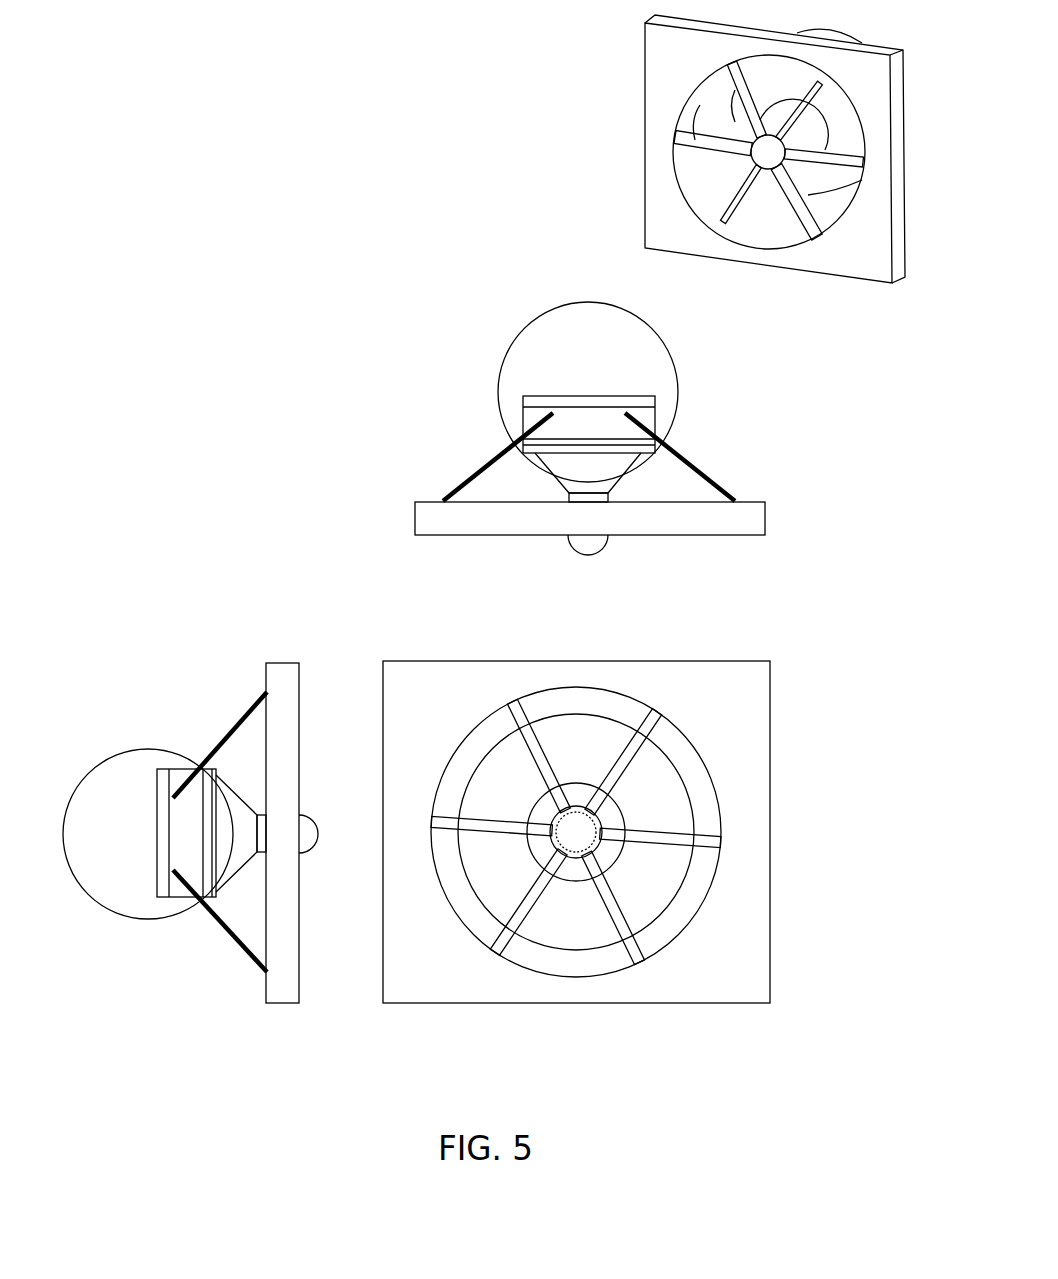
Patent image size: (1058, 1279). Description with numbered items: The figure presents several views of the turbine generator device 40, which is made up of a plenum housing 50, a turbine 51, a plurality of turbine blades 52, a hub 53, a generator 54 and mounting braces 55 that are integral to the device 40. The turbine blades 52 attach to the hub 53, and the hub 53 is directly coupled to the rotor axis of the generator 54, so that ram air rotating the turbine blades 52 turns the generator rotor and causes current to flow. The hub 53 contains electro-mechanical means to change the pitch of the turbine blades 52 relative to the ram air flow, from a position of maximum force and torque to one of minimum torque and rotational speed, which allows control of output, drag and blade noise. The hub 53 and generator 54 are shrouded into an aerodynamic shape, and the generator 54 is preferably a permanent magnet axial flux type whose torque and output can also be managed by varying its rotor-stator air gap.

The turbine generator device 40 is at (702, 152).
The plenum housing 50 is at (539, 509).
The turbine 51 is at (639, 832).
The turbine blades 52 is at (711, 140).
The hub 53 is at (453, 805).
The generator 54 is at (370, 671).
The mounting braces 55 is at (409, 659).